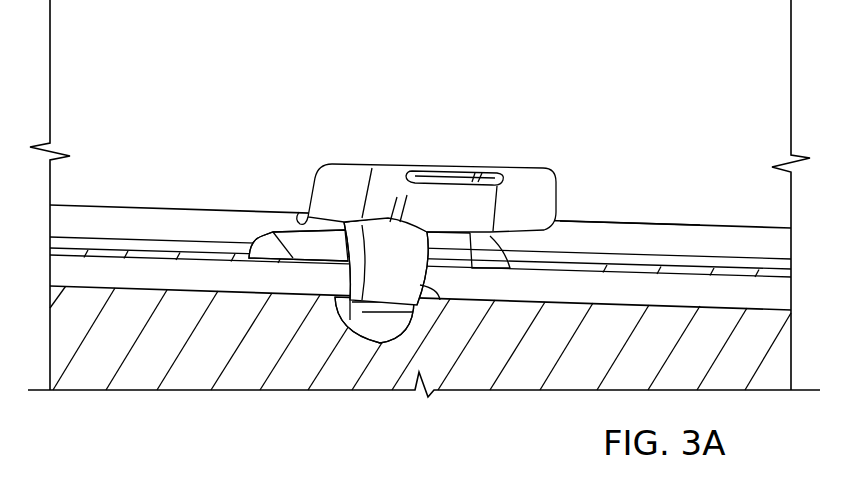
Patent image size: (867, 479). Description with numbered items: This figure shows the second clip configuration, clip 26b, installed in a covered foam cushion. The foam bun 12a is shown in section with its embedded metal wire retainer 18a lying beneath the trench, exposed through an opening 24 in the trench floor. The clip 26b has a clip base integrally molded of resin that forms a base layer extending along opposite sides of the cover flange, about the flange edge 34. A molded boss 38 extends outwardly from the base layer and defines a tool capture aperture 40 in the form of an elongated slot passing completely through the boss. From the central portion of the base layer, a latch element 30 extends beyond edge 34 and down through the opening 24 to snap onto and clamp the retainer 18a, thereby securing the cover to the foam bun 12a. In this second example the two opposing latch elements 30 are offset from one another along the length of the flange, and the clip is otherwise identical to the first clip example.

The foam bun 12a is at (777, 259).
The retainer 18a is at (548, 305).
The opening 24 is at (272, 233).
The clip 26b is at (348, 343).
The latch element 30 is at (420, 285).
The edge 34 is at (633, 226).
The molded boss 38 is at (507, 199).
The tool capture aperture 40 is at (438, 175).